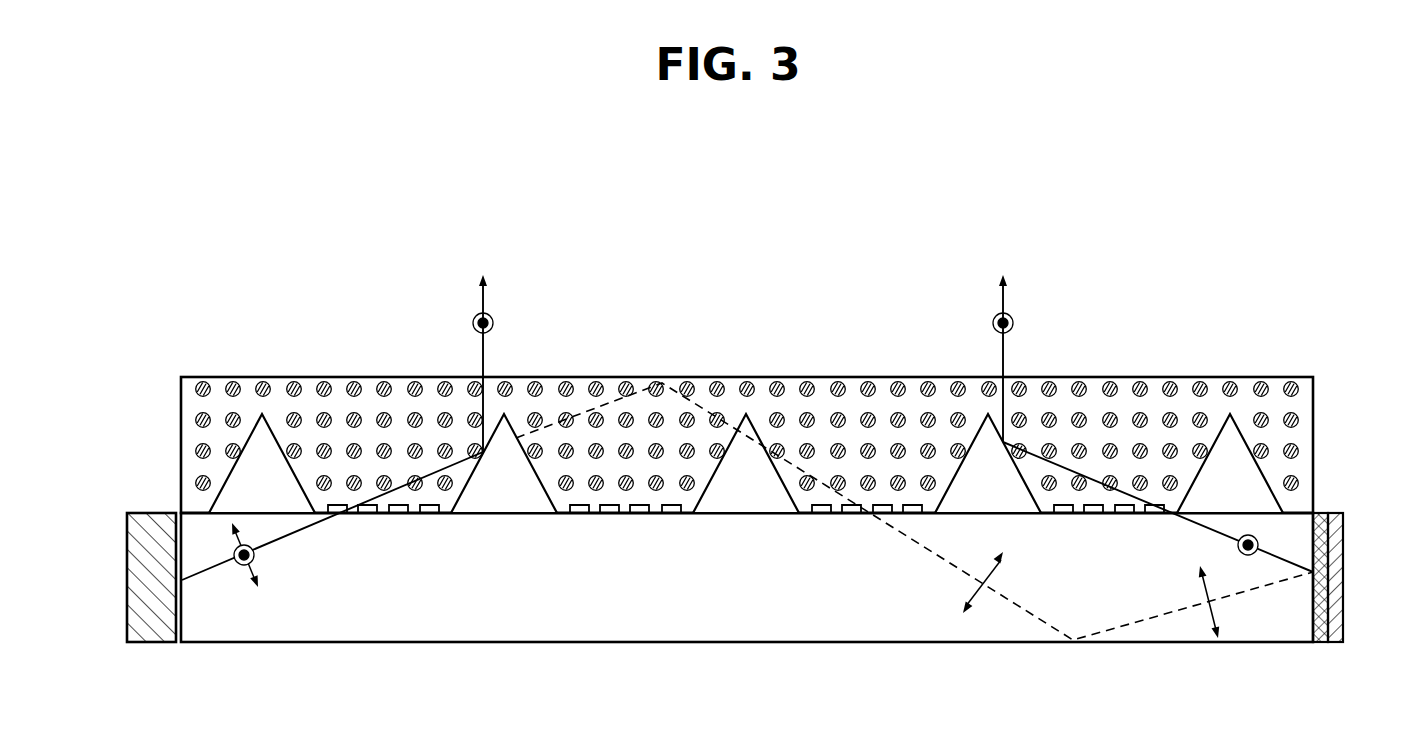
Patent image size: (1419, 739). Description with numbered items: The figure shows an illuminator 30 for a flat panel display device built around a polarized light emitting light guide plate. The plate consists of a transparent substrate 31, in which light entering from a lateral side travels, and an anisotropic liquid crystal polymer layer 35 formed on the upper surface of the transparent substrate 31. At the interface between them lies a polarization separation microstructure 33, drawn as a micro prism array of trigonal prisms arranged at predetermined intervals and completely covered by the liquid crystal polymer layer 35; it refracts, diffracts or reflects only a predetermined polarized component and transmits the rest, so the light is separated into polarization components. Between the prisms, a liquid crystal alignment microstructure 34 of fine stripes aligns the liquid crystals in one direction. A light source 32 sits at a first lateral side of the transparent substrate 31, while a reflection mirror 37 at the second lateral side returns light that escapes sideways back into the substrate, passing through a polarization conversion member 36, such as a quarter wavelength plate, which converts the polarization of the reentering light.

The illuminator 30 is at (897, 702).
The transparent substrate 31 is at (802, 632).
The light source 32 is at (138, 597).
The polarization separation microstructure 33 is at (262, 443).
The liquid crystal alignment microstructure 34 is at (613, 515).
The anisotropic liquid crystal polymer layer 35 is at (371, 390).
The polarization conversion member 36 is at (1322, 510).
The reflection mirror 37 is at (1343, 533).